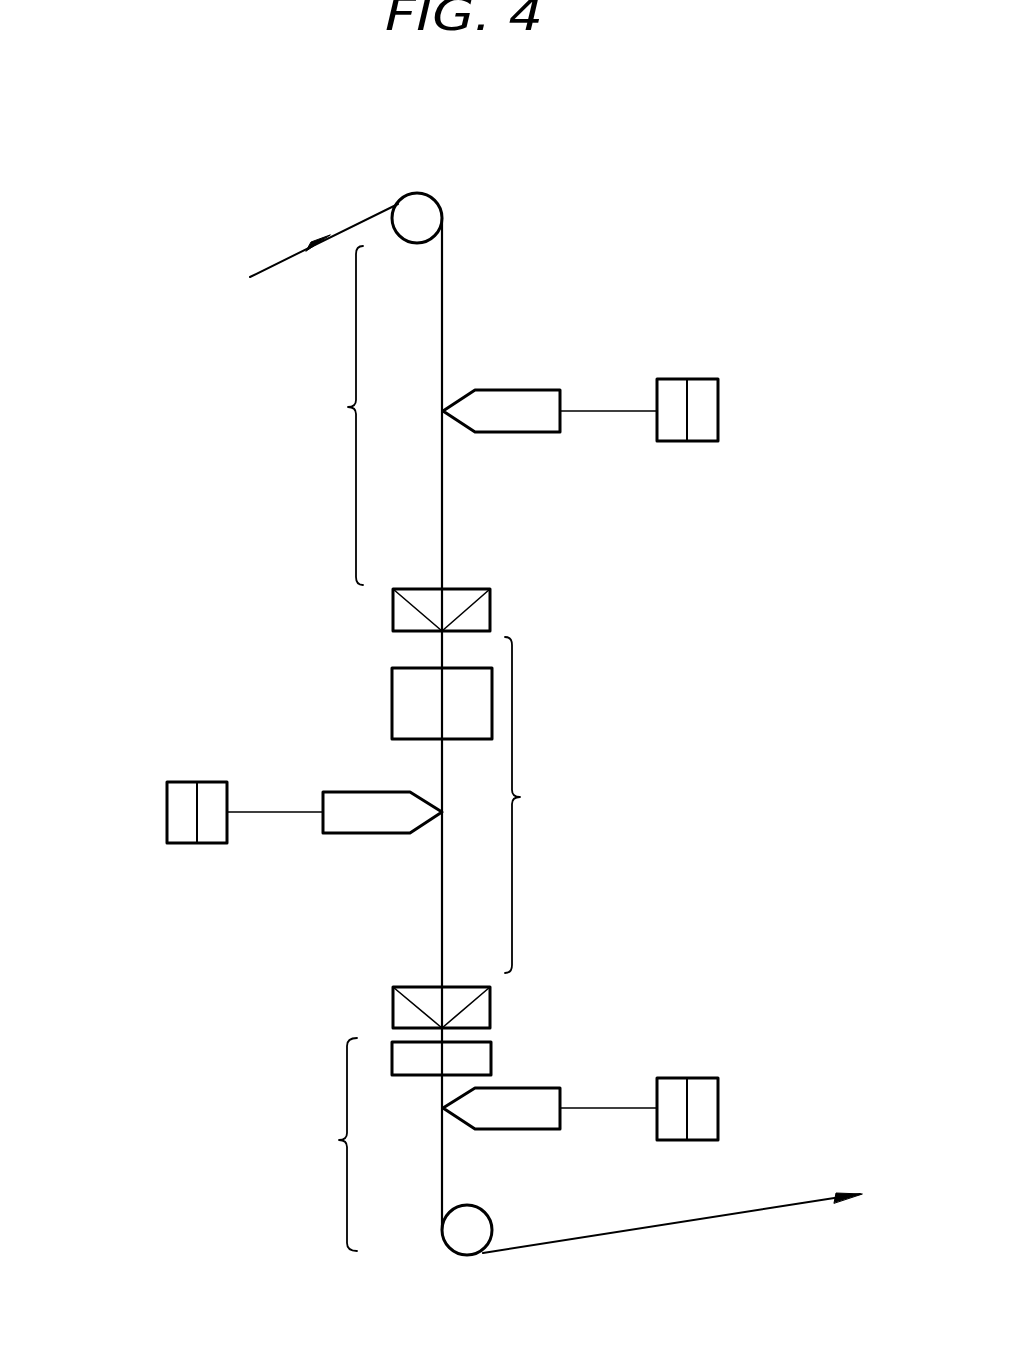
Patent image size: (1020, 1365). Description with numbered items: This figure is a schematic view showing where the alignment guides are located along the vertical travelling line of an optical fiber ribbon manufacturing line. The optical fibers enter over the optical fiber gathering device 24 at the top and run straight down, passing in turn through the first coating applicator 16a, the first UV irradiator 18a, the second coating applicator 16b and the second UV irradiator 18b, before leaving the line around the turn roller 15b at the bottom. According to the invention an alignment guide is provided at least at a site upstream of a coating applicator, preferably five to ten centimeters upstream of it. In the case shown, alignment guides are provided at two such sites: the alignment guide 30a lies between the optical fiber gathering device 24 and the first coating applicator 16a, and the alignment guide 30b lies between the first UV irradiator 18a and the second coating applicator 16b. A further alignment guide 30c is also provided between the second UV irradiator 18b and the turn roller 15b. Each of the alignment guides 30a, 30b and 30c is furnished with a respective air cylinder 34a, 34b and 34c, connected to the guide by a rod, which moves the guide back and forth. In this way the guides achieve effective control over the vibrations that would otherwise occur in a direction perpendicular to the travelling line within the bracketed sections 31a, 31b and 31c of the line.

The optical fiber gathering device 24 is at (422, 212).
The turn roller 15b is at (462, 1237).
The first coating applicator 16a is at (482, 612).
The second coating applicator 16b is at (480, 1011).
The first UV irradiator 18a is at (480, 708).
The second UV irradiator 18b is at (475, 1058).
The alignment guide 30a is at (550, 405).
The alignment guide 30b is at (330, 803).
The alignment guide 30c is at (550, 1099).
The air cylinder 34a is at (718, 415).
The air cylinder 34b is at (167, 822).
The air cylinder 34c is at (718, 1100).
The section 31a is at (328, 415).
The section 31b is at (541, 805).
The section 31c is at (322, 1144).